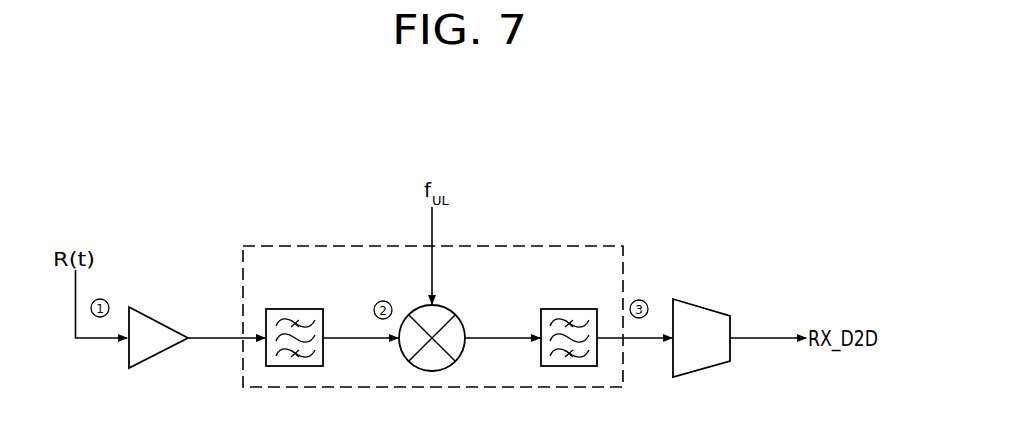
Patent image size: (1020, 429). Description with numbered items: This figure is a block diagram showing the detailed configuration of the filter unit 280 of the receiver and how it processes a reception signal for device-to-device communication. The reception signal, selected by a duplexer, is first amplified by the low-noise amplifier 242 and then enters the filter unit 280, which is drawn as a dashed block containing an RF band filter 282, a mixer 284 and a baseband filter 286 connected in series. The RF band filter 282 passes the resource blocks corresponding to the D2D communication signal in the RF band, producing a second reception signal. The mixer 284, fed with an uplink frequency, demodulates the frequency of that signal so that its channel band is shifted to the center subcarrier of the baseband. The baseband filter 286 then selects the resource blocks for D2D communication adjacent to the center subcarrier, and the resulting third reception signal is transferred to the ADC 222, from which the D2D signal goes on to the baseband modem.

The low-noise amplifier 242 is at (160, 320).
The filter unit 280 is at (547, 245).
The RF band filter 282 is at (295, 309).
The mixer 284 is at (459, 313).
The baseband filter 286 is at (570, 309).
The ADC 222 is at (702, 303).